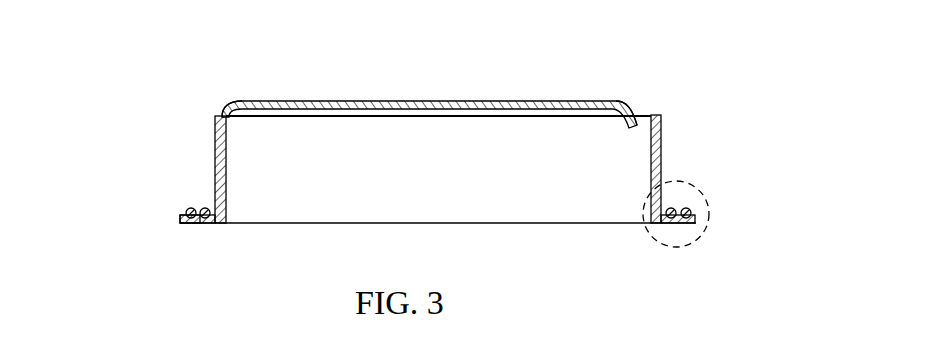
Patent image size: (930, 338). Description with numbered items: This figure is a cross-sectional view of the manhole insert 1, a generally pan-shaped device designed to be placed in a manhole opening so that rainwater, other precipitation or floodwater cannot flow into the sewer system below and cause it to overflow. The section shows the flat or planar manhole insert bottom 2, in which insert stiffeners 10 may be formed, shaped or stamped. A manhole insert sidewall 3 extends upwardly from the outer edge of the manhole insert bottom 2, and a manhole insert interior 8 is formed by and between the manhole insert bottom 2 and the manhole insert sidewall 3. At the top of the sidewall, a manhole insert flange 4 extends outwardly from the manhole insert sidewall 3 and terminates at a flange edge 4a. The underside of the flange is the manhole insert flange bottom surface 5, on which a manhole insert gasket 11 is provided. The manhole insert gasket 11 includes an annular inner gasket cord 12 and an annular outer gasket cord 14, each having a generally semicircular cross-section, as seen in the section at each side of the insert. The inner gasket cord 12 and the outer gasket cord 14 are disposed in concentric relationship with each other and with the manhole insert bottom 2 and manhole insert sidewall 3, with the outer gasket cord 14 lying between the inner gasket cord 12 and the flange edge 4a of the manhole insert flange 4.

The manhole insert 1 is at (168, 56).
The manhole insert bottom 2 is at (634, 115).
The manhole insert sidewall 3 is at (216, 140).
The manhole insert flange 4 is at (203, 226).
The flange edge 4a is at (182, 221).
The manhole insert flange bottom surface 5 is at (704, 192).
The manhole insert interior 8 is at (317, 190).
The insert stiffeners 10 is at (452, 103).
The manhole insert gasket 11 is at (679, 194).
The inner gasket cord 12 is at (202, 208).
The outer gasket cord 14 is at (187, 209).